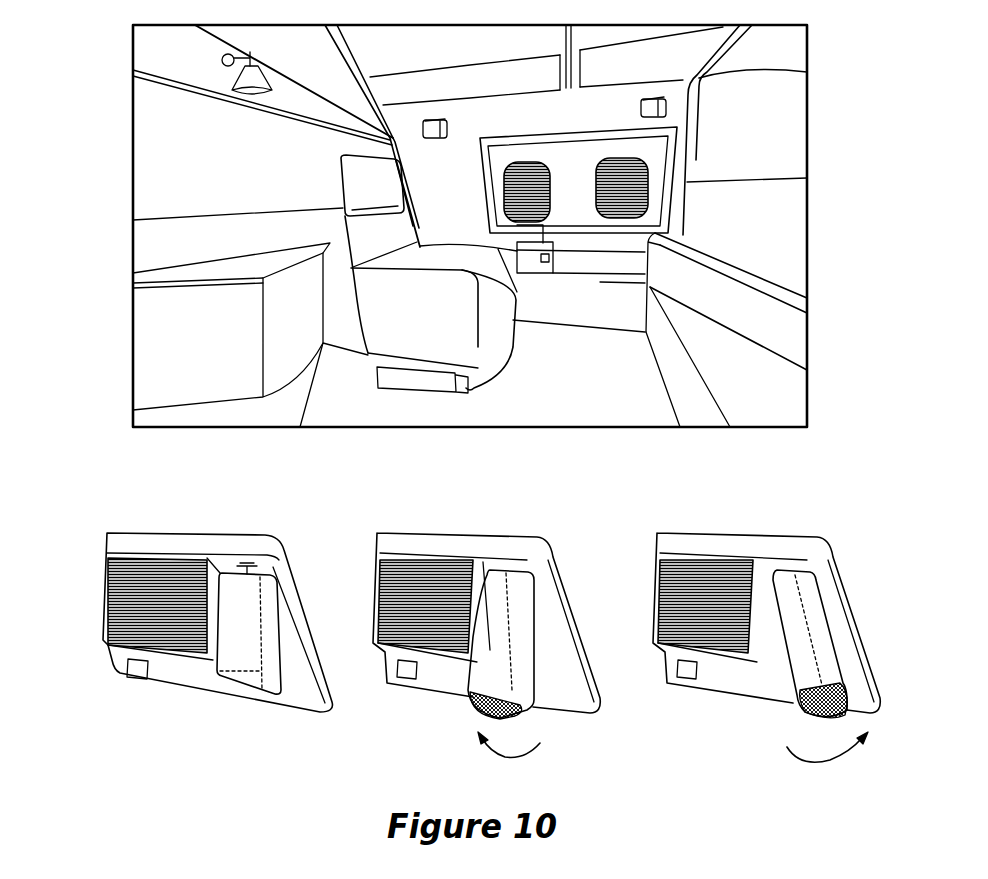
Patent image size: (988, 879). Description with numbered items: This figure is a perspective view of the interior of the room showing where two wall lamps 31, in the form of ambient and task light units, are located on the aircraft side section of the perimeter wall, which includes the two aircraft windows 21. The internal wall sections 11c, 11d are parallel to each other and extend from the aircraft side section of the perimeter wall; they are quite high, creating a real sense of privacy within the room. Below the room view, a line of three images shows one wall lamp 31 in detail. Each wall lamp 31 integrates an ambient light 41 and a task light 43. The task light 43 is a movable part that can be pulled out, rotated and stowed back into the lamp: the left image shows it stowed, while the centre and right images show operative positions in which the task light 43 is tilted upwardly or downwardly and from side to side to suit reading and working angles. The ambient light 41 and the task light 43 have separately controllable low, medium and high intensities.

The wall section 11c is at (787, 163).
The wall section 11d is at (151, 162).
The aircraft window 21 is at (625, 182).
The wall lamp 31 is at (447, 124).
The ambient light 41 is at (135, 598).
The task light 43 is at (270, 658).